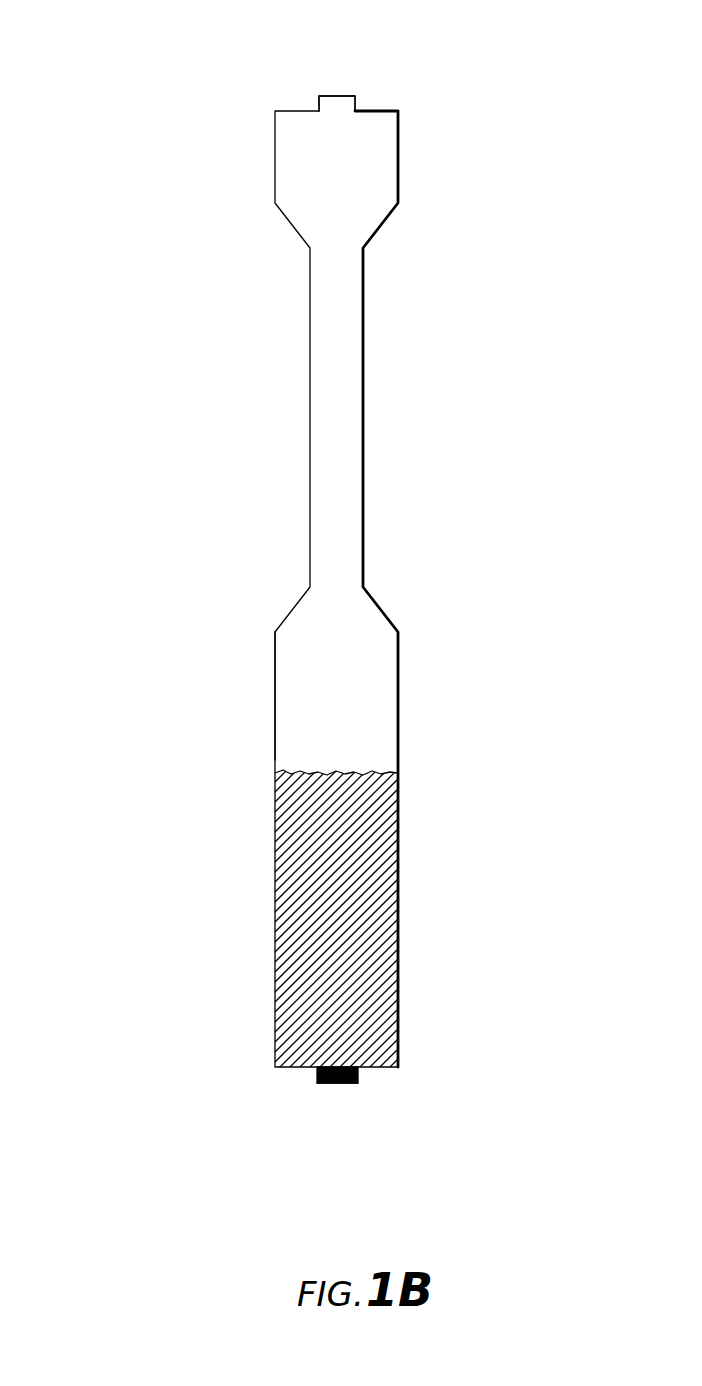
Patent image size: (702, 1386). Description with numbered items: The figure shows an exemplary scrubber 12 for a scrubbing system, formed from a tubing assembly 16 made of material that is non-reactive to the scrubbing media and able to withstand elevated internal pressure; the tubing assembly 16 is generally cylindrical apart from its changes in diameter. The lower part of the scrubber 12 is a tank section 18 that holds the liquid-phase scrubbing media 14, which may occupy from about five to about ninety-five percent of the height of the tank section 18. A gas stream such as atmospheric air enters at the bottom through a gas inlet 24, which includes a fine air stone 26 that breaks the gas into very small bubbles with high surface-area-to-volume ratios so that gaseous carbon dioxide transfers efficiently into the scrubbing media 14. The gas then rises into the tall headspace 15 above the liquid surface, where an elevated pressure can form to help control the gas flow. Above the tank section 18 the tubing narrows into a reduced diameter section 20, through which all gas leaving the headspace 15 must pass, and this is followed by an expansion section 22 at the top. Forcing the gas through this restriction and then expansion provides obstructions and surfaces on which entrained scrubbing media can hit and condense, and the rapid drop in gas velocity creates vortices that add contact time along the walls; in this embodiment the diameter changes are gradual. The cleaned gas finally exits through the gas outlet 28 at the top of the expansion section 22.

The scrubber 12 is at (136, 124).
The scrubbing media 14 is at (345, 917).
The headspace 15 is at (348, 683).
The tubing assembly 16 is at (275, 657).
The tank section 18 is at (445, 1067).
The reduced diameter section 20 is at (445, 258).
The expansion section 22 is at (445, 112).
The gas inlet 24 is at (340, 1106).
The fine air stone 26 is at (340, 1083).
The gas outlet 28 is at (332, 75).